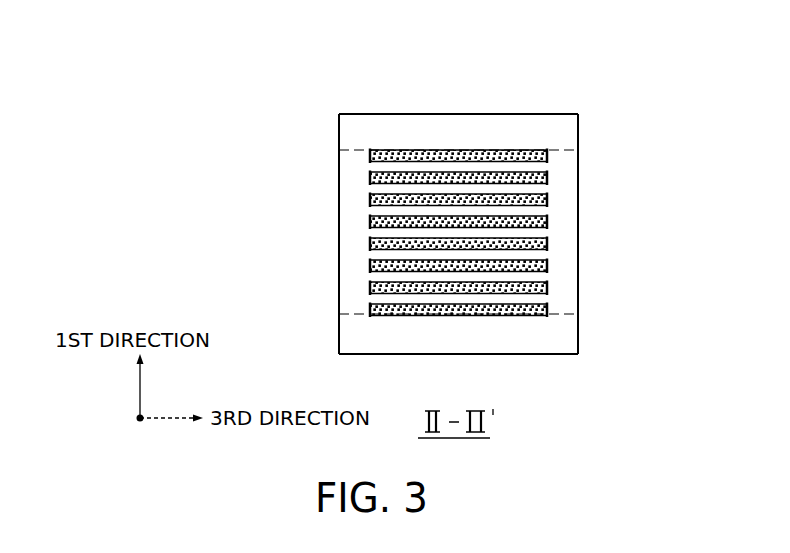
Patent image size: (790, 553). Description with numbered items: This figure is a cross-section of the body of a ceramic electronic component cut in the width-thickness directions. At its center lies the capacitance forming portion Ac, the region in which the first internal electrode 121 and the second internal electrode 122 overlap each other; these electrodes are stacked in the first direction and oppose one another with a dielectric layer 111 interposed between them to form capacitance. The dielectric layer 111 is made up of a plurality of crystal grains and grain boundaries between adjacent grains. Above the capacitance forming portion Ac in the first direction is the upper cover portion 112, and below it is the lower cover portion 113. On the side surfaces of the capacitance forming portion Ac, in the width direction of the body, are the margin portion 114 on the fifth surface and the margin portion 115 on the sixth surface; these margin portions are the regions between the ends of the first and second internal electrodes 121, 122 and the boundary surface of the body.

The dielectric layer 111 is at (548, 162).
The upper cover portion 112 is at (465, 131).
The lower cover portion 113 is at (570, 333).
The margin portion 114 is at (353, 270).
The margin portion 115 is at (570, 258).
The first internal electrode 121 is at (548, 150).
The second internal electrode 122 is at (548, 173).
The capacitance forming portion Ac is at (358, 237).